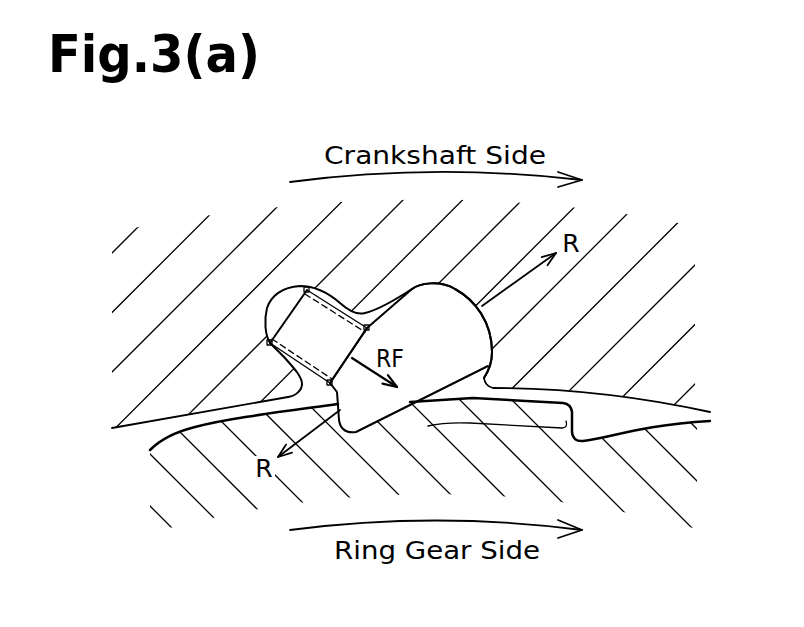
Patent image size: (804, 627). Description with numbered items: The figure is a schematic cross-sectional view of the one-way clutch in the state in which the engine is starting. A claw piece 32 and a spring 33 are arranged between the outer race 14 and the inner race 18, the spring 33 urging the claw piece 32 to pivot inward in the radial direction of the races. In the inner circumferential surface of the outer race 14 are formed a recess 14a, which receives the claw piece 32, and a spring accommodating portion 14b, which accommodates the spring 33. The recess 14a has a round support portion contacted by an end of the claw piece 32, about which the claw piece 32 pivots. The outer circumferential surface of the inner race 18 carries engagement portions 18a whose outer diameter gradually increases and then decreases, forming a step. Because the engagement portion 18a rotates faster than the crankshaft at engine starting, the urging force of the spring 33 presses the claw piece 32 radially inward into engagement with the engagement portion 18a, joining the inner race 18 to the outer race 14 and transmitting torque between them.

The outer race 14 is at (196, 245).
The recess 14a is at (419, 288).
The spring accommodating portion 14b is at (272, 308).
The inner race 18 is at (233, 497).
The engagement portion 18a is at (343, 444).
The claw piece 32 is at (482, 326).
The spring 33 is at (356, 313).